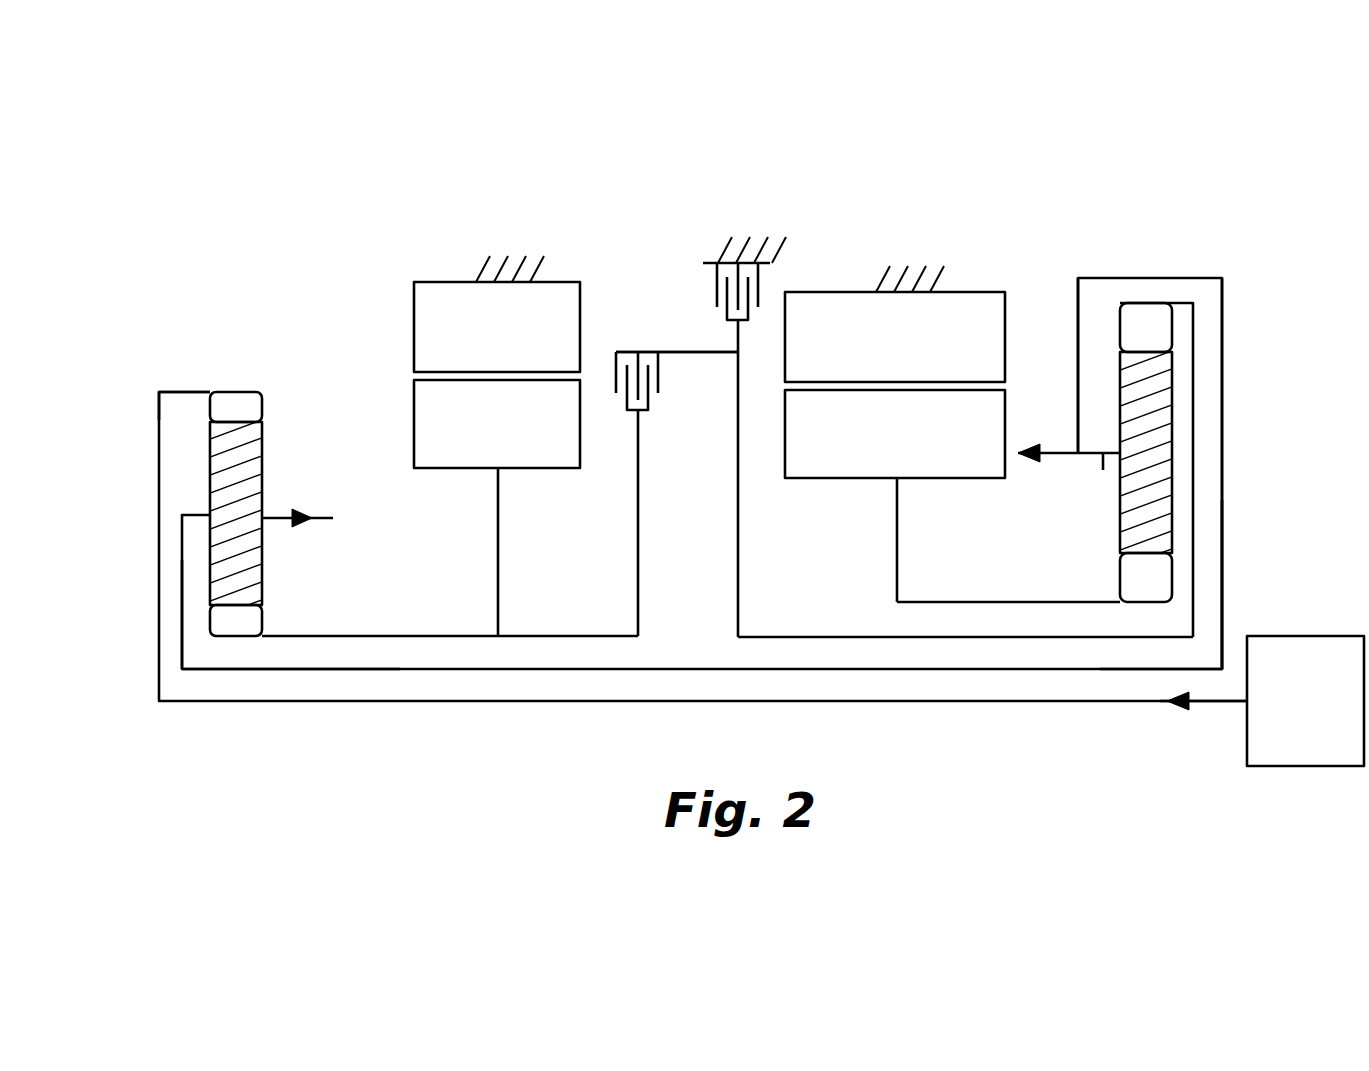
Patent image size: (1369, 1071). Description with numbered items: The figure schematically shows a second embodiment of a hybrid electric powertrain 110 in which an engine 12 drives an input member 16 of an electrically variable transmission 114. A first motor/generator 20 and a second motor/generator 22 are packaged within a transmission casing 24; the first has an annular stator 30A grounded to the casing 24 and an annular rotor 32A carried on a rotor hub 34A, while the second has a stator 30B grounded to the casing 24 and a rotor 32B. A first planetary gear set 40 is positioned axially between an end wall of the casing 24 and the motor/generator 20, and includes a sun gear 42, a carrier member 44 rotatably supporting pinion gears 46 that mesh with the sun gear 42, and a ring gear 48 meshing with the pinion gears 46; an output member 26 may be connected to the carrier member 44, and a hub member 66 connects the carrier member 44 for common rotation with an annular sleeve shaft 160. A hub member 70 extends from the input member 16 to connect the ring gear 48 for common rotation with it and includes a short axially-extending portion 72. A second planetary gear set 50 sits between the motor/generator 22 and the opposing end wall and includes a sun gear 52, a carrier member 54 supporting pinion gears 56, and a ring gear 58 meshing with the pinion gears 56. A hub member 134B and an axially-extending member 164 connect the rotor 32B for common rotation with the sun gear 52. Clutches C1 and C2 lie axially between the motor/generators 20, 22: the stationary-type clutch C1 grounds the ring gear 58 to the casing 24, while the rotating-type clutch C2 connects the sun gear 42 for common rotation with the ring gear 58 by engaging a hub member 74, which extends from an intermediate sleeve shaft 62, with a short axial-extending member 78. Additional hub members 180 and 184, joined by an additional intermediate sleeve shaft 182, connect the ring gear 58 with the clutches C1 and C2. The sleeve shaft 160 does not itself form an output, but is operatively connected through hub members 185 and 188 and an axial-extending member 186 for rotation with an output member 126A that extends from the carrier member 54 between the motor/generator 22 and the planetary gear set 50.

The powertrain 110 is at (982, 206).
The electrically variable transmission 114 is at (247, 286).
The engine 12 is at (1305, 701).
The input member 16 is at (1105, 702).
The first motor/generator 20 is at (452, 375).
The second motor/generator 22 is at (922, 385).
The transmission casing 24 is at (478, 274).
The transmission output member 26 is at (283, 518).
The stator 30A is at (497, 327).
The rotor 32A is at (497, 424).
The stator 30B is at (895, 337).
The rotor 32B is at (895, 434).
The rotor hub 34A is at (498, 545).
The hub member 134B is at (896, 536).
The first planetary gear set 40 is at (285, 487).
The sun gear 42 is at (269, 616).
The carrier member 44 is at (188, 515).
The pinion gears 46 is at (263, 560).
The ring gear 48 is at (262, 408).
The second planetary gear set 50 is at (1099, 415).
The sun gear 52 is at (1114, 577).
The carrier member 54 is at (1103, 453).
The pinion gears 56 is at (1173, 377).
The ring gear 58 is at (1120, 325).
The intermediate sleeve shaft 62 is at (408, 636).
The hub member 66 is at (182, 568).
The hub member 70 is at (159, 472).
The axially-extending portion 72 is at (180, 392).
The hub member 74 is at (638, 572).
The axial-extending member 78 is at (672, 352).
The output member 126A is at (1072, 453).
The annular sleeve shaft 160 is at (750, 670).
The axially-extending member 164 is at (967, 602).
The hub member 180 is at (737, 573).
The intermediate sleeve shaft 182 is at (890, 637).
The hub member 184 is at (1222, 448).
The hub member 185 is at (1225, 522).
The axial-extending member 186 is at (1173, 278).
The hub member 188 is at (1078, 303).
The stationary-type clutch C1 is at (762, 282).
The rotating-type clutch C2 is at (619, 400).